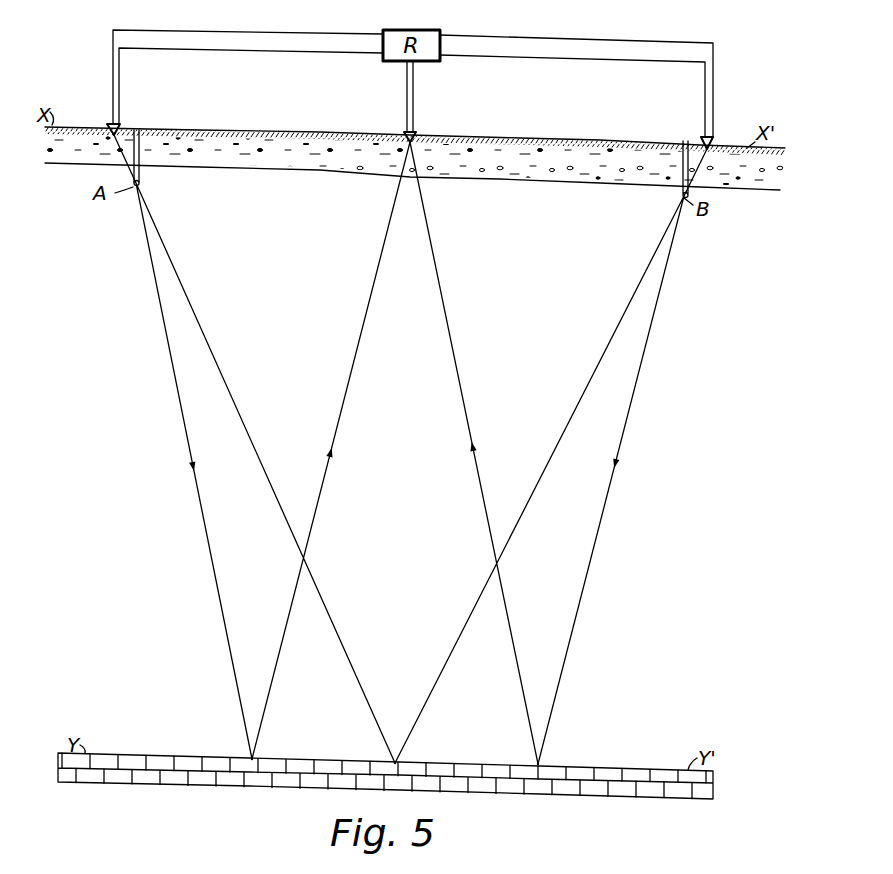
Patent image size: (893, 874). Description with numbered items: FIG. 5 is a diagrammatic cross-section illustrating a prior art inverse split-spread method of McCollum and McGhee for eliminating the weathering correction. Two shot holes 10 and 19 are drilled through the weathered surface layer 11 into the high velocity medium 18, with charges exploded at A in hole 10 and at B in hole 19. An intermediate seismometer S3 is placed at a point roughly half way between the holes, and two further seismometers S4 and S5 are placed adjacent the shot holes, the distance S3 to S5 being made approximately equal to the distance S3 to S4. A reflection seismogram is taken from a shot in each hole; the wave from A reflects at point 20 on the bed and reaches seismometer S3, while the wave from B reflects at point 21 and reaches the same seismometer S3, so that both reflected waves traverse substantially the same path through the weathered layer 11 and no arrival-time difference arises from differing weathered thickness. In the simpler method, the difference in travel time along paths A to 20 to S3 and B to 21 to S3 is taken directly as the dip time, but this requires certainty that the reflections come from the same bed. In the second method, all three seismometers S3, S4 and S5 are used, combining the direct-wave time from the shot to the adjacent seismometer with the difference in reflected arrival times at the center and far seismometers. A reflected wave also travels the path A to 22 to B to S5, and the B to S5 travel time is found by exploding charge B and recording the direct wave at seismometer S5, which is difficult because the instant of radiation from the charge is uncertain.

The shot hole 10 is at (141, 132).
The earth surface layer 11 is at (515, 152).
The high velocity medium 18 is at (538, 195).
The shot hole 19 is at (682, 142).
The reflection point 20 is at (260, 757).
The reflection point 21 is at (546, 761).
The reflection point 22 is at (403, 760).
The intermediate seismometer S3 is at (416, 133).
The seismometer S4 is at (113, 123).
The seismometer S5 is at (710, 137).